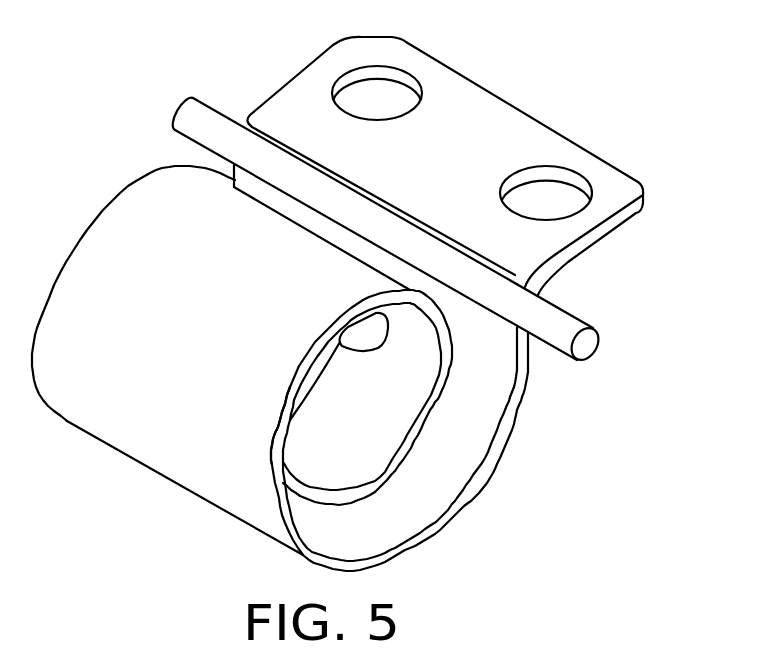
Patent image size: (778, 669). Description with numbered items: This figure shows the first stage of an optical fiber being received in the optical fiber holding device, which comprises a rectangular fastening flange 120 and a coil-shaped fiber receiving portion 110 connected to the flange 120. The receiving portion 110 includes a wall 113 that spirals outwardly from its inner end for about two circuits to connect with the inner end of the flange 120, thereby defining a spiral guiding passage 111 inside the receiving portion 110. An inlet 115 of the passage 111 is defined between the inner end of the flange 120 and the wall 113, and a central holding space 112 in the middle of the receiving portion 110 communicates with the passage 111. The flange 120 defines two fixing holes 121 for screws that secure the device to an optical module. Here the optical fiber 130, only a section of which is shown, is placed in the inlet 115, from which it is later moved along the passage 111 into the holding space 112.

The coil-shaped fiber receiving portion 110 is at (92, 450).
The spiral guiding passage 111 is at (455, 438).
The central holding space 112 is at (337, 443).
The wall 113 is at (280, 443).
The inlet 115 is at (257, 187).
The fastening flange 120 is at (485, 127).
The fixing holes 121 is at (553, 195).
The optical fiber 130 is at (557, 326).